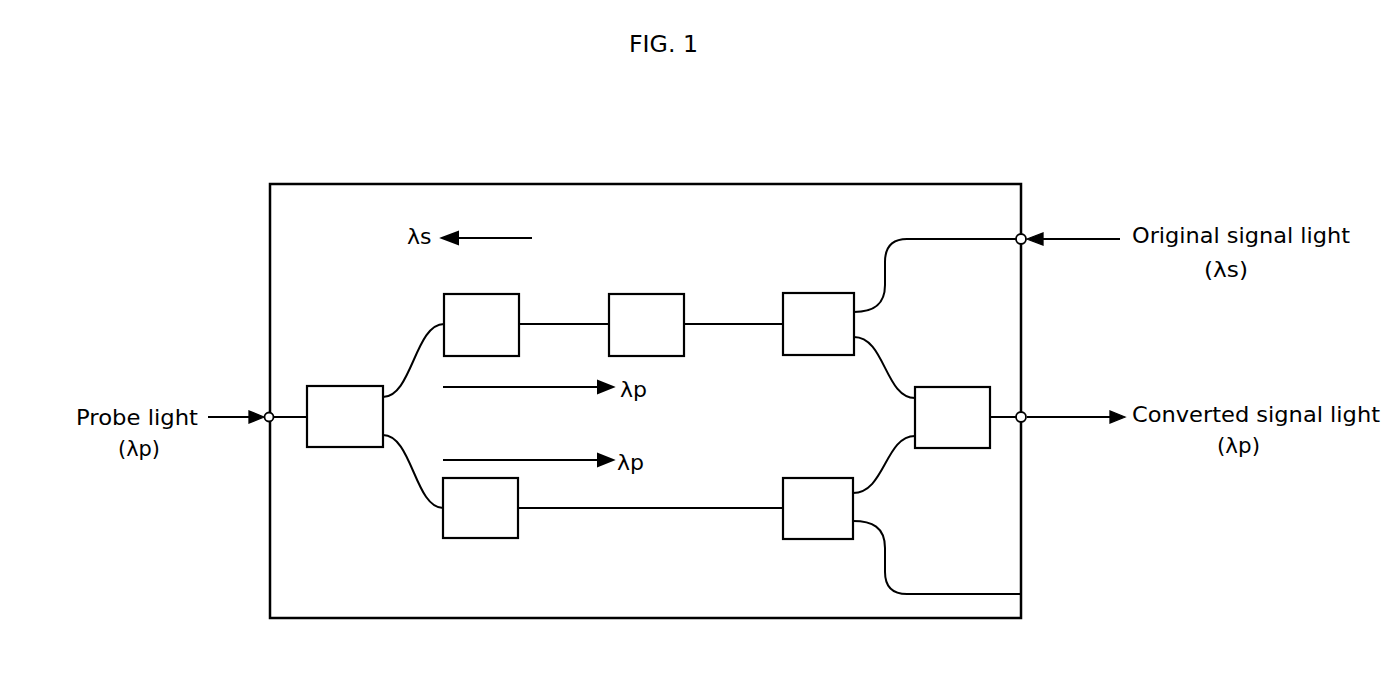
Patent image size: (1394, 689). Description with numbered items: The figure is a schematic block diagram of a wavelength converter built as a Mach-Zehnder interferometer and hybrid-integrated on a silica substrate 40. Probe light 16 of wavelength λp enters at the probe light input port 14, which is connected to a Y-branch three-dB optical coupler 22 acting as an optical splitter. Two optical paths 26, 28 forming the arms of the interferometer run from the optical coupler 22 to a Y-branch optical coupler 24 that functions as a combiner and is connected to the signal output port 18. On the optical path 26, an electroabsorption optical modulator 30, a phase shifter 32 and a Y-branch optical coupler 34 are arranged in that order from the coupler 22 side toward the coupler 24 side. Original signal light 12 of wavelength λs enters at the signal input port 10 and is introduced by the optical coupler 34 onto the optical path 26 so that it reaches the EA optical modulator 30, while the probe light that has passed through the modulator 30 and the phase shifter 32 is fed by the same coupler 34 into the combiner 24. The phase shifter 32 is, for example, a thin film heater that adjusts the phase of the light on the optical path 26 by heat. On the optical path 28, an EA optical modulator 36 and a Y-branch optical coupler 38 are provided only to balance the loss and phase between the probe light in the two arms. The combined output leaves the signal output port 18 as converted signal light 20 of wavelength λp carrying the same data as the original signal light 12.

The signal input port 10 is at (1027, 244).
The original signal light 12 is at (1083, 236).
The probe light input port 14 is at (266, 424).
The probe light 16 is at (224, 408).
The signal output port 18 is at (1027, 422).
The converted signal light 20 is at (1071, 412).
The Y-branch 3-dB optical coupler 22 is at (343, 398).
The Y-branch optical coupler 24 is at (956, 398).
The optical path 26 is at (735, 298).
The optical path 28 is at (676, 526).
The electroabsorption optical modulator 30 is at (483, 300).
The phase shifter 32 is at (645, 300).
The Y-branch optical coupler 34 is at (817, 300).
The EA optical modulator 36 is at (479, 538).
The Y-branch optical coupler 38 is at (815, 540).
The silica substrate 40 is at (724, 612).